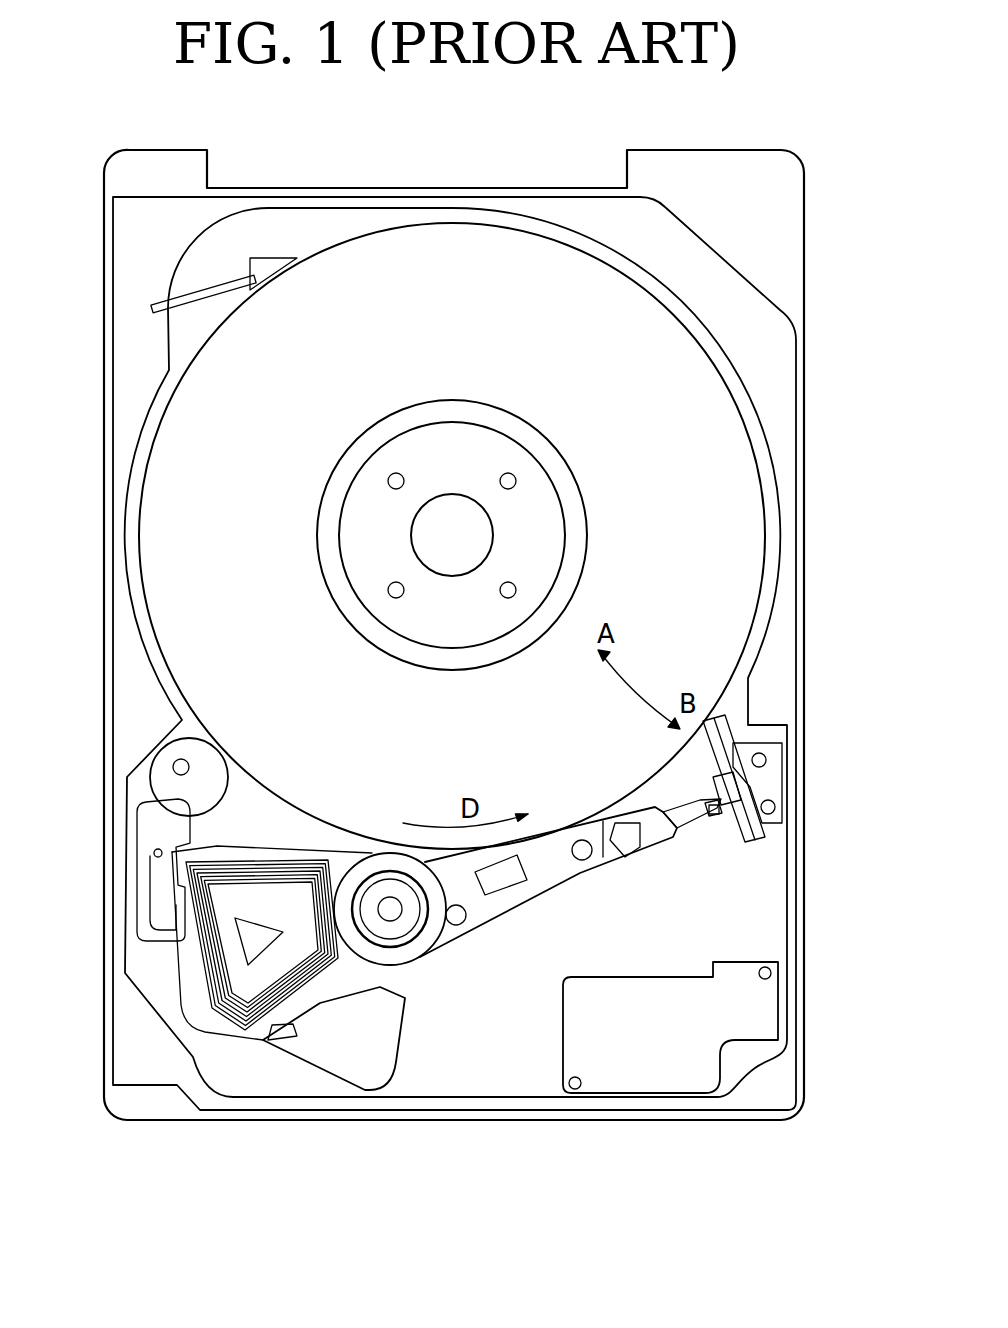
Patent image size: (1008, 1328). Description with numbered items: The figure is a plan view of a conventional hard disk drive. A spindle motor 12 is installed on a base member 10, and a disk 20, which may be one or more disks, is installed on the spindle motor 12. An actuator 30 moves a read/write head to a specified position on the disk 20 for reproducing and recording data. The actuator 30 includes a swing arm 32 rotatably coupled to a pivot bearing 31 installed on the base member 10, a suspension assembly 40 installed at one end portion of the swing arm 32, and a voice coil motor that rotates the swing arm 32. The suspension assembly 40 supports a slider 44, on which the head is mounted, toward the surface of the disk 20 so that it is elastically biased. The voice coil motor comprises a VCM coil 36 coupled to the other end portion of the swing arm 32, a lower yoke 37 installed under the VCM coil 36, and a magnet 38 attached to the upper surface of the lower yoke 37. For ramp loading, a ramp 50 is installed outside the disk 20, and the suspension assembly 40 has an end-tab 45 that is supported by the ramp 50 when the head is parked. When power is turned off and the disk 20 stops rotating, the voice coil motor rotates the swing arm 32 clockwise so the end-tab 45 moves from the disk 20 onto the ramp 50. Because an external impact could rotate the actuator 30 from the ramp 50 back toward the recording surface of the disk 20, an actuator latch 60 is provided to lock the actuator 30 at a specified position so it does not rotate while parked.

The base member 10 is at (777, 675).
The spindle motor 12 is at (485, 452).
The disk 20 is at (745, 500).
The actuator 30 is at (458, 995).
The pivot bearing 31 is at (400, 913).
The swing arm 32 is at (515, 897).
The VCM coil 36 is at (243, 1032).
The lower yoke 37 is at (270, 1078).
The magnet 38 is at (360, 1073).
The suspension assembly 40 is at (682, 822).
The slider 44 is at (708, 822).
The end-tab 45 is at (735, 805).
The ramp 50 is at (730, 752).
The actuator latch 60 is at (147, 863).